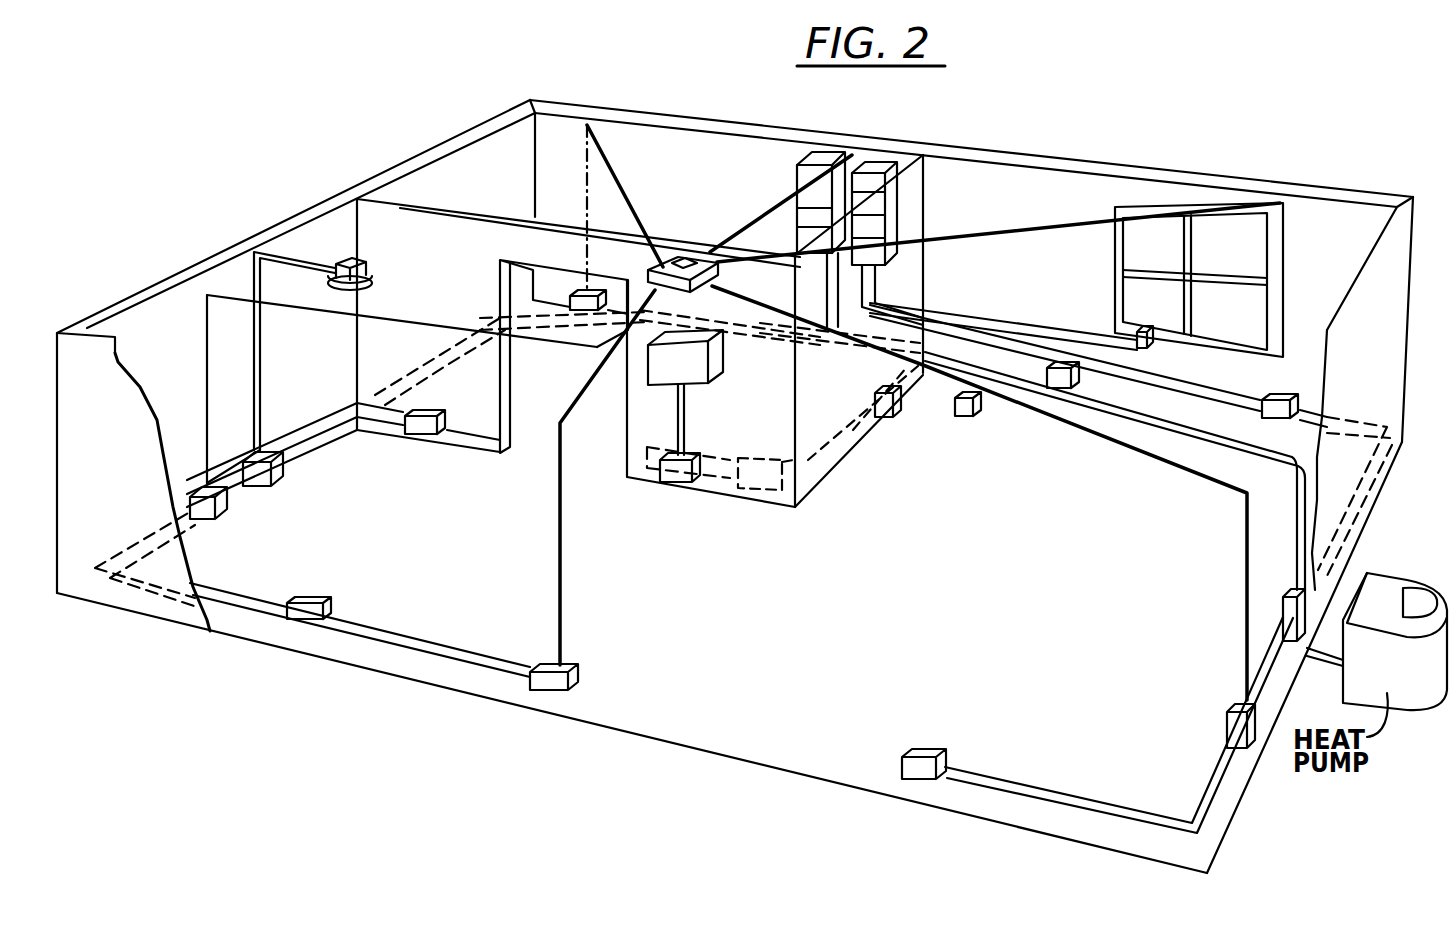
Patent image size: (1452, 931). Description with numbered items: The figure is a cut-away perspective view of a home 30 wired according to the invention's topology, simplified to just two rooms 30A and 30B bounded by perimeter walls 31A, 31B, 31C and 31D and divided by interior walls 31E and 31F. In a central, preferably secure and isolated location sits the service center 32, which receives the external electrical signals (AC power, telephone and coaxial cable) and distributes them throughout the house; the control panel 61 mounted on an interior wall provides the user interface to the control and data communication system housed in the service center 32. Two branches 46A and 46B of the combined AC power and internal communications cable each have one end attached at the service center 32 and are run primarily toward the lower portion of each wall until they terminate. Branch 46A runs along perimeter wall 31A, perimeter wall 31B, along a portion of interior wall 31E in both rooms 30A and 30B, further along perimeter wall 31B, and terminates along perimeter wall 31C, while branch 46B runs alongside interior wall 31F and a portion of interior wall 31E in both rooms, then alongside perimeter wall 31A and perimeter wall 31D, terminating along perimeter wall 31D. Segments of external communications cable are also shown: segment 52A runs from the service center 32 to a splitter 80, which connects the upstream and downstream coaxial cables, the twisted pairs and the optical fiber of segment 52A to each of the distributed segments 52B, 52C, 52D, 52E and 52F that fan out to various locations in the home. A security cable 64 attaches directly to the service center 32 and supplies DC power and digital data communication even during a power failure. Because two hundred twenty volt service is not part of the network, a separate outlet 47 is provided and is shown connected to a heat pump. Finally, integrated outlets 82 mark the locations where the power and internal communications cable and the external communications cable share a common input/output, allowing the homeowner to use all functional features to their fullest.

The home 30 is at (1288, 165).
The perimeter wall 31A is at (567, 137).
The perimeter wall 31B is at (489, 150).
The perimeter wall 31C is at (123, 485).
The perimeter wall 31D is at (1391, 379).
The interior wall 31E is at (455, 273).
The interior wall 31F is at (815, 428).
The room 30A is at (579, 389).
The room 30B is at (1022, 629).
The service center 32 is at (803, 263).
The branch of AC power and internal communications cable 46A is at (435, 658).
The branch of AC power and internal communications cable 46B is at (1053, 797).
The outlet 47 is at (1367, 517).
The segment of external communications cable 52A is at (779, 202).
The segment of external communications cable 52B is at (616, 178).
The segment of external communications cable 52C is at (639, 357).
The segment of external communications cable 52D is at (562, 540).
The segment of external communications cable 52E is at (1158, 465).
The segment of external communications cable 52F is at (1036, 227).
The control panel 61 is at (692, 382).
The security cable 64 is at (990, 322).
The splitter 80 is at (687, 257).
The integrated outlet 82 is at (588, 307).